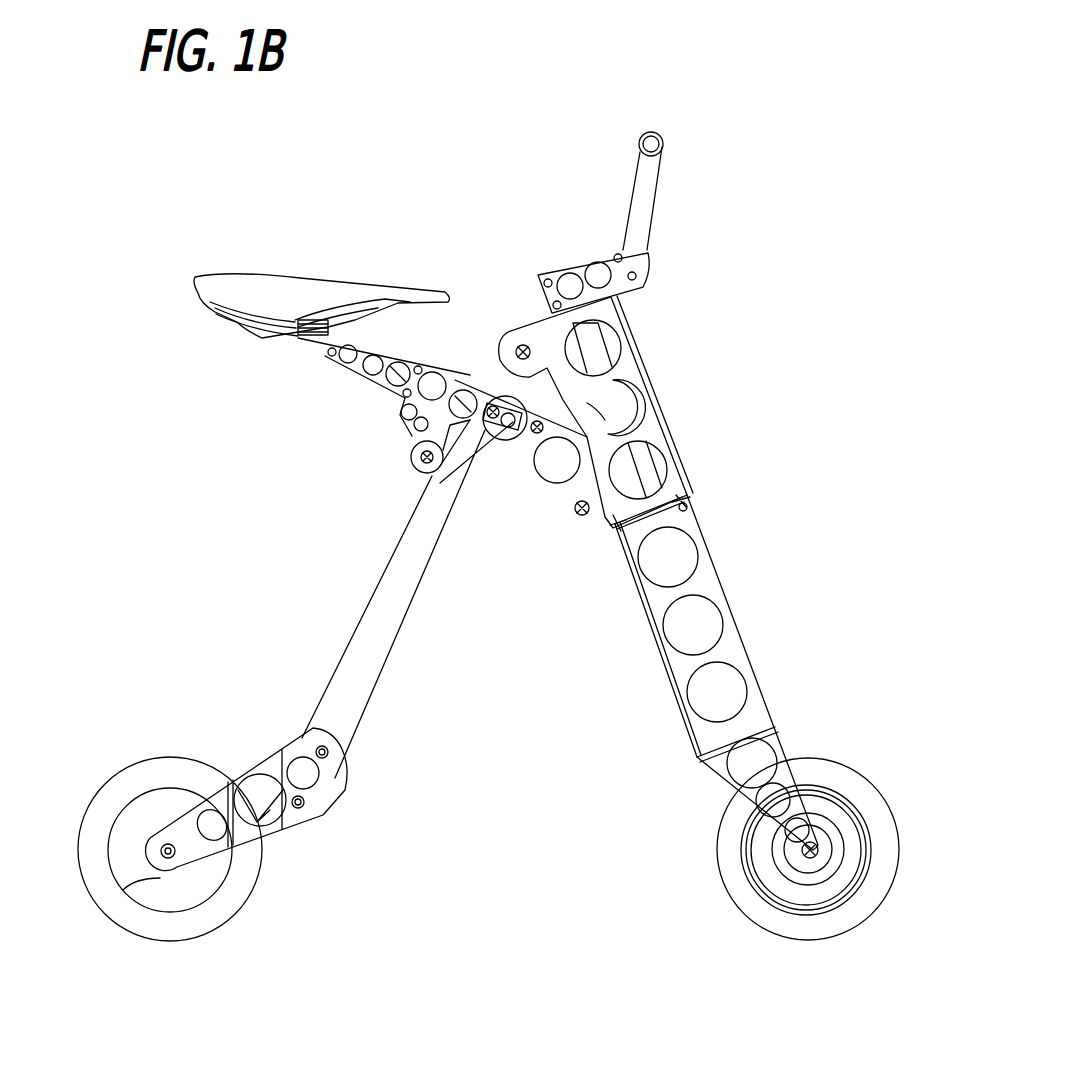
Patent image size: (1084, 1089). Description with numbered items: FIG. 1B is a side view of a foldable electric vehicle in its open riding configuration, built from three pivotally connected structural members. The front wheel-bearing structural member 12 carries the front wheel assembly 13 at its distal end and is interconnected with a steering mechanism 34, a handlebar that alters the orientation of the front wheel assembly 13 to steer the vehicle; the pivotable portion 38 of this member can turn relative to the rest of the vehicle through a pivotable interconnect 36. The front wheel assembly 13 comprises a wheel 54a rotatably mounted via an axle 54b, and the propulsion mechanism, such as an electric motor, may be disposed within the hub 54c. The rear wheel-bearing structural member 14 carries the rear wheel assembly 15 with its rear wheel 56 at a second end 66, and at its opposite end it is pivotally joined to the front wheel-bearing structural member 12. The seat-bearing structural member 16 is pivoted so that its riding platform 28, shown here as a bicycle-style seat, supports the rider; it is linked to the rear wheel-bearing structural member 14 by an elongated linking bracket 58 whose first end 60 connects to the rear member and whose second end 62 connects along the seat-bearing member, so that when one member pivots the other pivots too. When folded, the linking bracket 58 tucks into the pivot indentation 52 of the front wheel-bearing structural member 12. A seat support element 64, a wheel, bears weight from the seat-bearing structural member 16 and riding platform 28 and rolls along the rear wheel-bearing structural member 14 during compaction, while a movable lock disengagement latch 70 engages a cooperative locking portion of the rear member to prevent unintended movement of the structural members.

The front wheel-bearing structural member 12 is at (650, 425).
The front wheel assembly 13 is at (887, 867).
The rear wheel-bearing structural member 14 is at (393, 588).
The rear wheel assembly 15 is at (137, 783).
The seat-bearing structural member 16 is at (353, 367).
The riding platform 28 is at (268, 295).
The steering mechanism 34 is at (648, 187).
The pivotable interconnect 36 is at (688, 497).
The pivotable portion 38 is at (710, 567).
The pivot indentation 52 is at (607, 411).
The wheel 54a is at (860, 783).
The axle 54b is at (790, 855).
The hub 54c is at (808, 884).
The rear wheel 56 is at (123, 890).
The elongated linking bracket 58 is at (498, 430).
The first end 60 is at (492, 413).
The second end 62 is at (537, 430).
The seat support element 64 is at (410, 447).
The second end 66 is at (330, 810).
The lock disengagement latch 70 is at (395, 410).